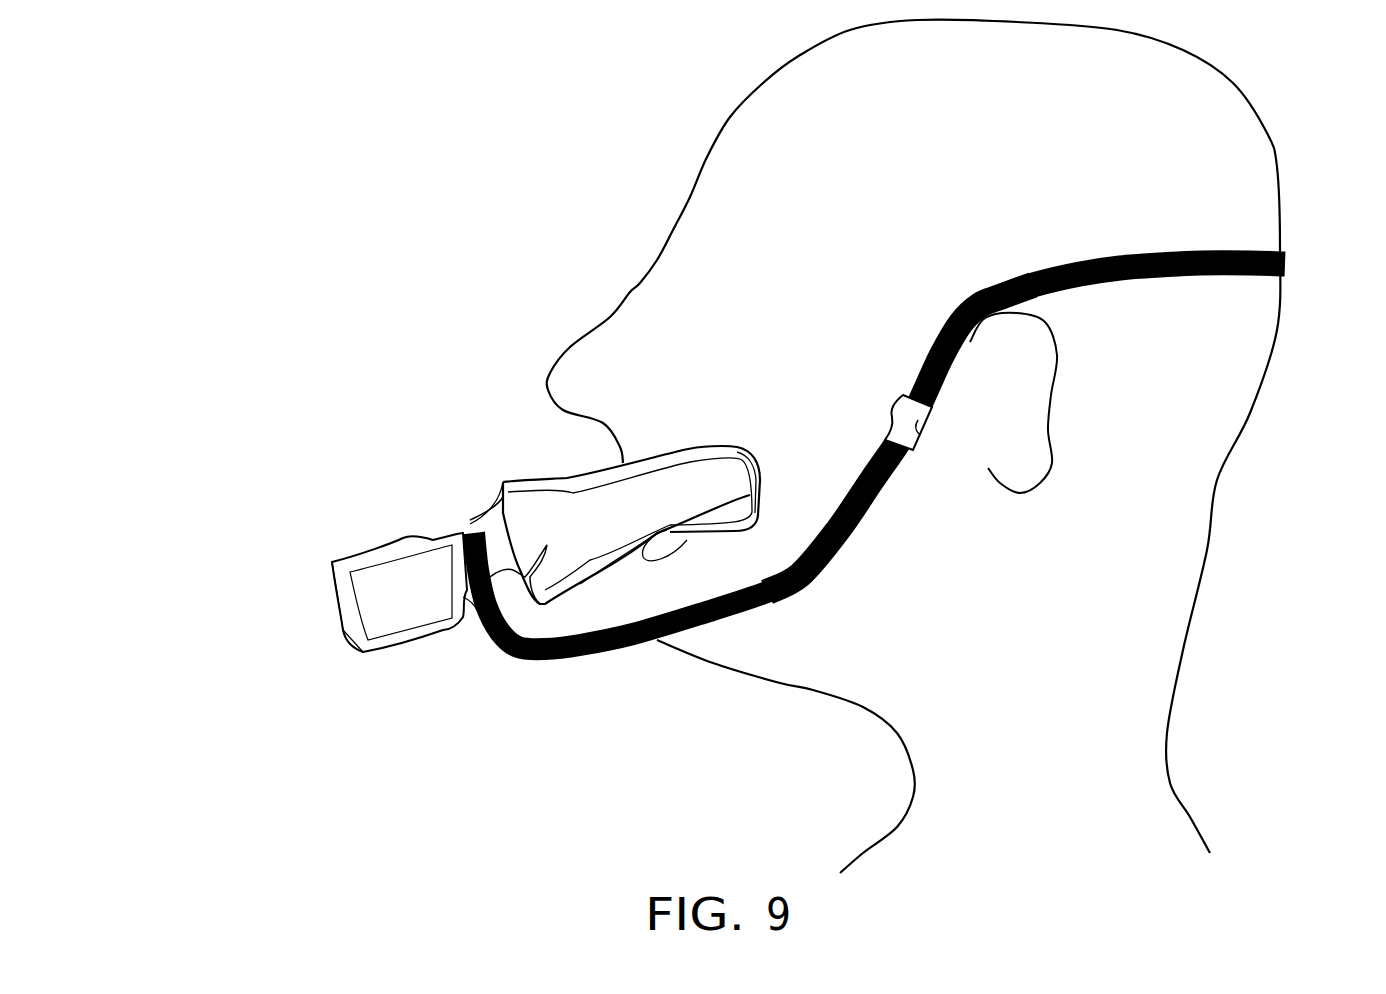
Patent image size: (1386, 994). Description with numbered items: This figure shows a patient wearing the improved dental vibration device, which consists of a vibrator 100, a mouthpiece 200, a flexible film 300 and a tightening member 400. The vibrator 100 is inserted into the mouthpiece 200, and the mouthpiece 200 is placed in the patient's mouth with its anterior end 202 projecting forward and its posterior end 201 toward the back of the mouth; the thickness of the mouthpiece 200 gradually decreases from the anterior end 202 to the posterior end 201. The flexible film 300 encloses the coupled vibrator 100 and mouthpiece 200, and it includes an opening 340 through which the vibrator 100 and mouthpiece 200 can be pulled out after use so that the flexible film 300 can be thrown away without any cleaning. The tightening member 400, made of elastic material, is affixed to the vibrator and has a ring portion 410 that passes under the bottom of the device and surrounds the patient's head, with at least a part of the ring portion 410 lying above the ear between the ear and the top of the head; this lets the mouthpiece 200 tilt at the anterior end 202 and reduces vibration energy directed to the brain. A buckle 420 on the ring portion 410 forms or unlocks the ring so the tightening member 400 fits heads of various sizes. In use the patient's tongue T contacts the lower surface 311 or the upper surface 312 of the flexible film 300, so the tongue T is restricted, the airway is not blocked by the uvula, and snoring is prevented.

The vibrator 100 is at (363, 573).
The mouthpiece 200 is at (547, 543).
The posterior end 201 is at (755, 466).
The anterior end 202 is at (325, 585).
The flexible film 300 is at (575, 475).
The lower surface 311 is at (667, 535).
The upper surface 312 is at (678, 447).
The opening 340 is at (347, 608).
The tightening member 400 is at (465, 525).
The ring portion 410 is at (1172, 252).
The buckle 420 is at (904, 394).
The tongue T is at (677, 543).